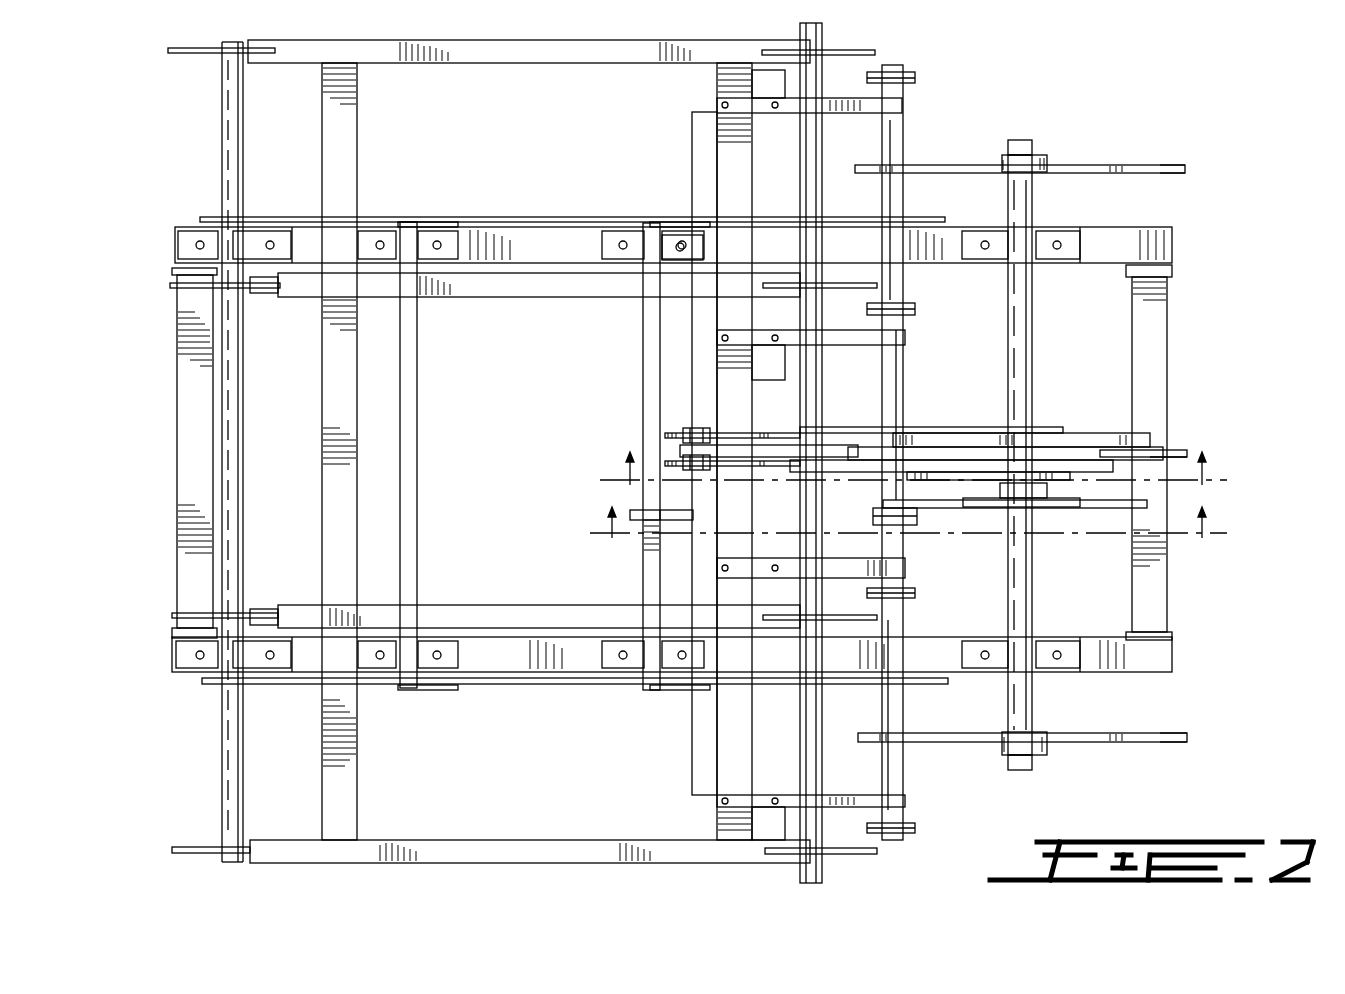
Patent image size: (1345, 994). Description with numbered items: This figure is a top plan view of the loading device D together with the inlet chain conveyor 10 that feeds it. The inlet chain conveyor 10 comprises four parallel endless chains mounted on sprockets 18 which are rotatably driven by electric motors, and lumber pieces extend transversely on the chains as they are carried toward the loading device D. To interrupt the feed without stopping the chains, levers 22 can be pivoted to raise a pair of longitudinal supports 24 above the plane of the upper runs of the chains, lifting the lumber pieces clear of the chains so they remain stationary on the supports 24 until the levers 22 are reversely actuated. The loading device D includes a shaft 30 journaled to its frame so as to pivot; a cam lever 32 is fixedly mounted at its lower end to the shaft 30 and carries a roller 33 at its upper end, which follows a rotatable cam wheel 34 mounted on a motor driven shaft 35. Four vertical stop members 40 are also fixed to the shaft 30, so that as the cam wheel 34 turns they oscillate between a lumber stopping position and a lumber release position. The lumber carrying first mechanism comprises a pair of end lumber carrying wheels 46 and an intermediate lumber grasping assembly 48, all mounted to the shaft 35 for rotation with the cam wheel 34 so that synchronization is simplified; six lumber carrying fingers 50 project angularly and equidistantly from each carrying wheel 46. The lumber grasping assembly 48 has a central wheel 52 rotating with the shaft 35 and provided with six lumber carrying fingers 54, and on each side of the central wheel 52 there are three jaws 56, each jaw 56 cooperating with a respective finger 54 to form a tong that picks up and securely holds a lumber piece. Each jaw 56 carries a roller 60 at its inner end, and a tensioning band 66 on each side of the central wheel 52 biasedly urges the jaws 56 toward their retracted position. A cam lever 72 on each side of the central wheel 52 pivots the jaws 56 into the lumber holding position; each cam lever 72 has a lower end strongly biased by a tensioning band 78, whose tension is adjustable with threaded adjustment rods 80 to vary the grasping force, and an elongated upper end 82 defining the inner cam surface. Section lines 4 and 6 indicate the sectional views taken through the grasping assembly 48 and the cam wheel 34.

The inlet chain conveyor 10 is at (630, 42).
The sprockets 18 is at (190, 53).
The levers 22 is at (410, 215).
The longitudinal supports 24 is at (485, 215).
The shaft 30 is at (905, 752).
The cam lever 32 is at (905, 525).
The roller 33 is at (893, 500).
The cam wheel 34 is at (1030, 498).
The motor driven shaft 35 is at (1032, 290).
The stop members 40 is at (915, 78).
The lumber carrying wheels 46 is at (1115, 165).
The lumber grasping assembly 48 is at (1085, 447).
The lumber carrying fingers 50 is at (1185, 170).
The central wheel 52 is at (1150, 452).
The lumber carrying fingers 54 is at (1170, 456).
The jaws 56 is at (1065, 462).
The roller 60 is at (1100, 475).
The tensioning band 66 is at (1050, 498).
The cam lever 72 is at (930, 470).
The tensioning band 78 is at (768, 461).
The threaded adjustment rods 80 is at (683, 462).
The elongated upper end 82 is at (990, 435).
The section line 4 is at (911, 474).
The section line 6 is at (903, 528).
The loading device D is at (1226, 233).